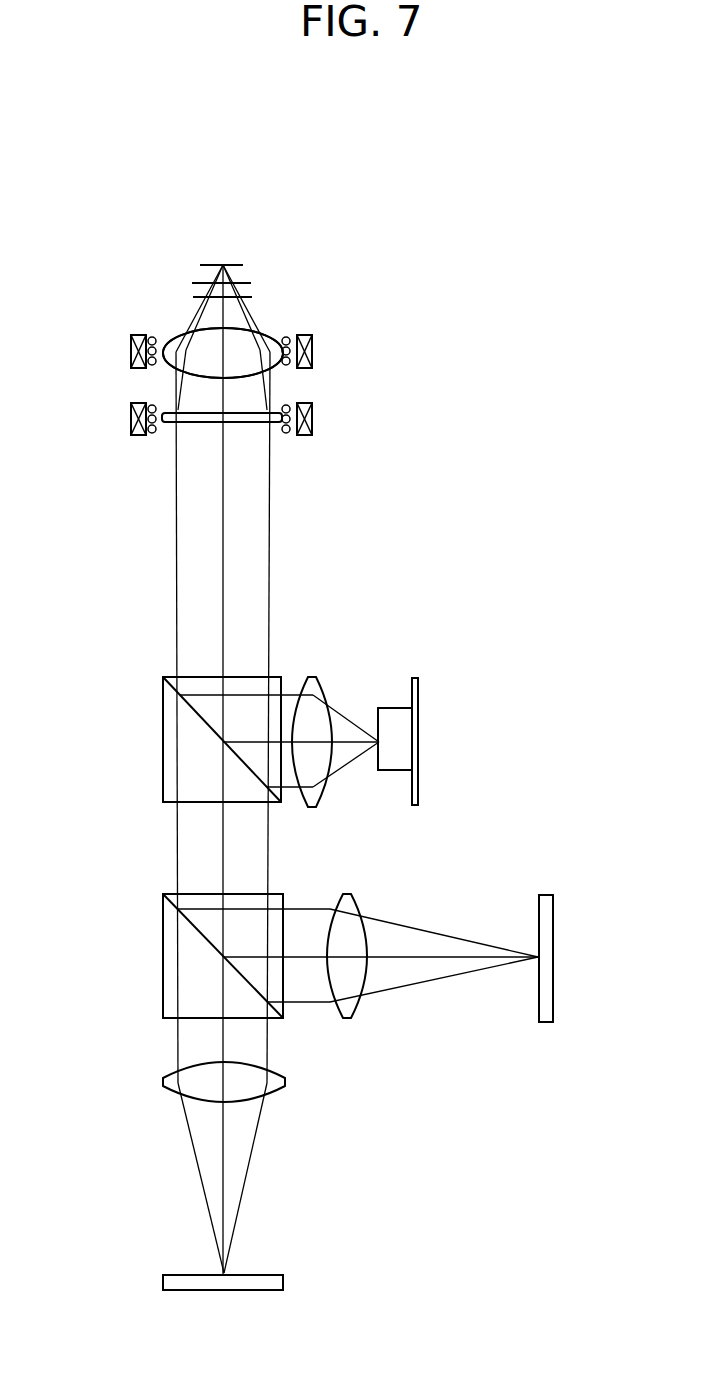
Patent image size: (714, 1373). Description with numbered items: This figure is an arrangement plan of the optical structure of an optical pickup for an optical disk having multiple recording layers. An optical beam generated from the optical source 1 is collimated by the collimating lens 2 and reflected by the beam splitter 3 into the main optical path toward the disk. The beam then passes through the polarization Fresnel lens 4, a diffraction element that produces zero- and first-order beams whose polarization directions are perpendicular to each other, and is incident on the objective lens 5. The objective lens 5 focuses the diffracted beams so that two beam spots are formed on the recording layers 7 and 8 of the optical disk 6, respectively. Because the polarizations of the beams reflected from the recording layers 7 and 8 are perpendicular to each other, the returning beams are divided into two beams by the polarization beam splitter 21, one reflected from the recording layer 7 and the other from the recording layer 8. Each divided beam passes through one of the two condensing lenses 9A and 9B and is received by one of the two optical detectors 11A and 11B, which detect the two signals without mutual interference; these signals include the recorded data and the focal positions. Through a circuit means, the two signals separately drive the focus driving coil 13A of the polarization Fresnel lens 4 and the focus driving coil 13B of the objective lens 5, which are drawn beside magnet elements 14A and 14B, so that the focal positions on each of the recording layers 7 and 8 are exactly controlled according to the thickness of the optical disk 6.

The optical source 1 is at (421, 750).
The collimating lens 2 is at (317, 677).
The beam splitter 3 is at (168, 758).
The polarization Fresnel lens 4 is at (203, 422).
The objective lens 5 is at (193, 343).
The optical disk 6 is at (188, 242).
The recording layer 7 is at (243, 267).
The recording layer 8 is at (252, 305).
The condensing lens 9A is at (177, 1085).
The condensing lens 9B is at (352, 1018).
The optical detector 11A is at (280, 1282).
The optical detector 11B is at (548, 1015).
The focus driving coil 13A is at (285, 403).
The focus driving coil 13B is at (285, 338).
The magnet 14A is at (313, 415).
The magnet 14B is at (313, 343).
The polarization beam splitter 21 is at (168, 978).